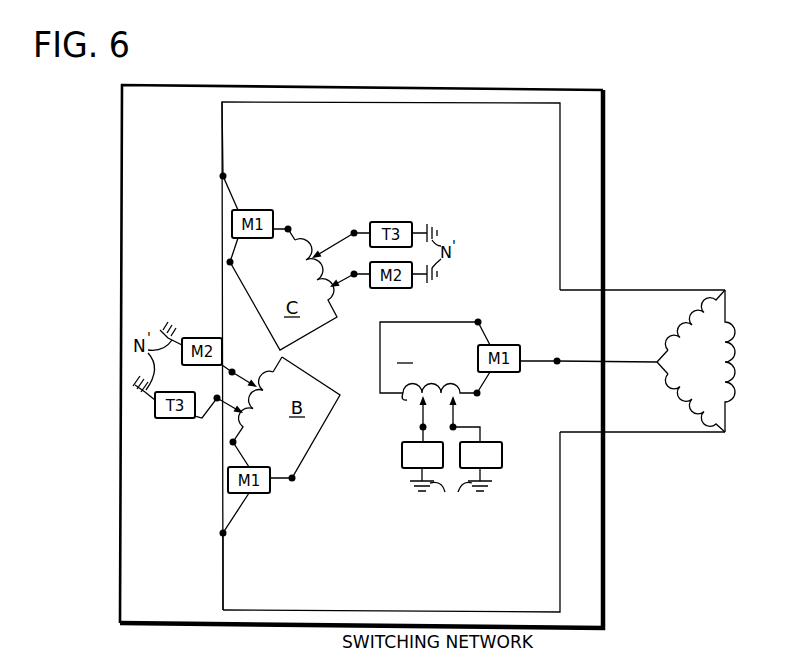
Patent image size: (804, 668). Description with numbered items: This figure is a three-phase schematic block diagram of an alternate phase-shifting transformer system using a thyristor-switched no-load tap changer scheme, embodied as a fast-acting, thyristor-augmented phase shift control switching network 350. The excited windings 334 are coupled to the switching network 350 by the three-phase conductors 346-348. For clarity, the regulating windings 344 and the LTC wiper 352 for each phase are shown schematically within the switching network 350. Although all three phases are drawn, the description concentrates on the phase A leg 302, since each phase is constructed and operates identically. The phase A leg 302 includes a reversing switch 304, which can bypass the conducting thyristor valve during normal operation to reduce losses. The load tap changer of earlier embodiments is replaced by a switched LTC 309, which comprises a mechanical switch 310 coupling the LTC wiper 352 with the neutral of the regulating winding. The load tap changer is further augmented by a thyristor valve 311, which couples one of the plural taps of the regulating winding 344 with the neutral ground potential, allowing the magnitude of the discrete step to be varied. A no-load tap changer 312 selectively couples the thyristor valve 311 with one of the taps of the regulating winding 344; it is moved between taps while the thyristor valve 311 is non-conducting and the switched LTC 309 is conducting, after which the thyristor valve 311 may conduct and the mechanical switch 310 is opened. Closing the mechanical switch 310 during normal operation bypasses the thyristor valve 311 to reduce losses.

The phase A leg 302 is at (468, 519).
The M1 reversing switch 304 is at (478, 353).
The switched load tap changer 309 is at (361, 467).
The mechanical switch 310 is at (402, 462).
The thyristor valve 311 is at (502, 462).
The no-load tap changer 312 is at (456, 428).
The excited windings 334 is at (660, 285).
The regulating windings 344 is at (408, 400).
The three-phase conductors 346-348 is at (637, 444).
The switching network 350 is at (585, 550).
The LTC wiper 352 is at (418, 421).